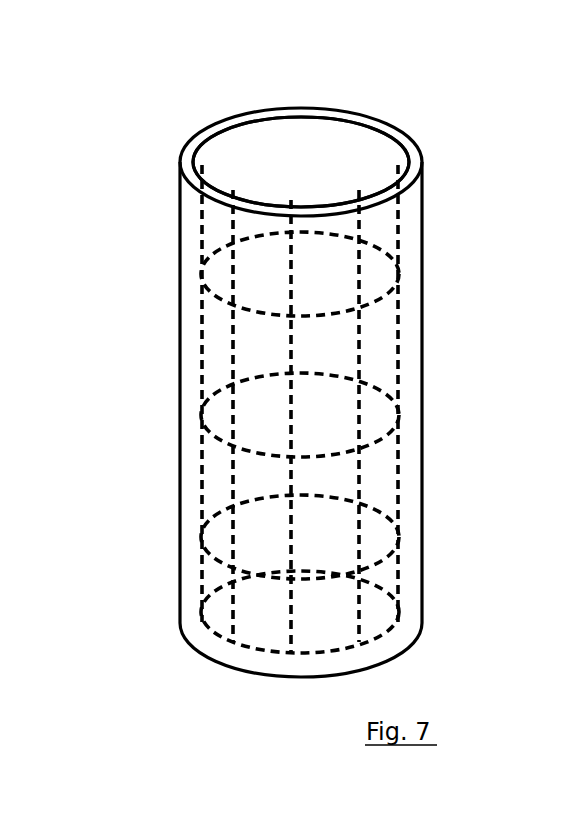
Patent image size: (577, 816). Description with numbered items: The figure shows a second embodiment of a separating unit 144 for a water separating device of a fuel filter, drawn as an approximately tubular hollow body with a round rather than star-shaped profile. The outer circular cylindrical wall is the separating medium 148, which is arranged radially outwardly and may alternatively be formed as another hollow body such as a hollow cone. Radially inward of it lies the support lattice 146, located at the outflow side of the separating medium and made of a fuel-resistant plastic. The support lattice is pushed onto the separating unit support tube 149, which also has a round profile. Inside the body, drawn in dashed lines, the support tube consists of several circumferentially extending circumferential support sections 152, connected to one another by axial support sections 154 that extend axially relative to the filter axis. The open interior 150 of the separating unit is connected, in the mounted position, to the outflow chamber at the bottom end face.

The separating unit 144 is at (332, 375).
The support lattice 146 is at (190, 140).
The separating medium 148 is at (423, 440).
The separating unit support tube 149 is at (330, 197).
The interior 150 is at (268, 178).
The circumferential support sections 152 is at (313, 317).
The axial support sections 154 is at (199, 334).